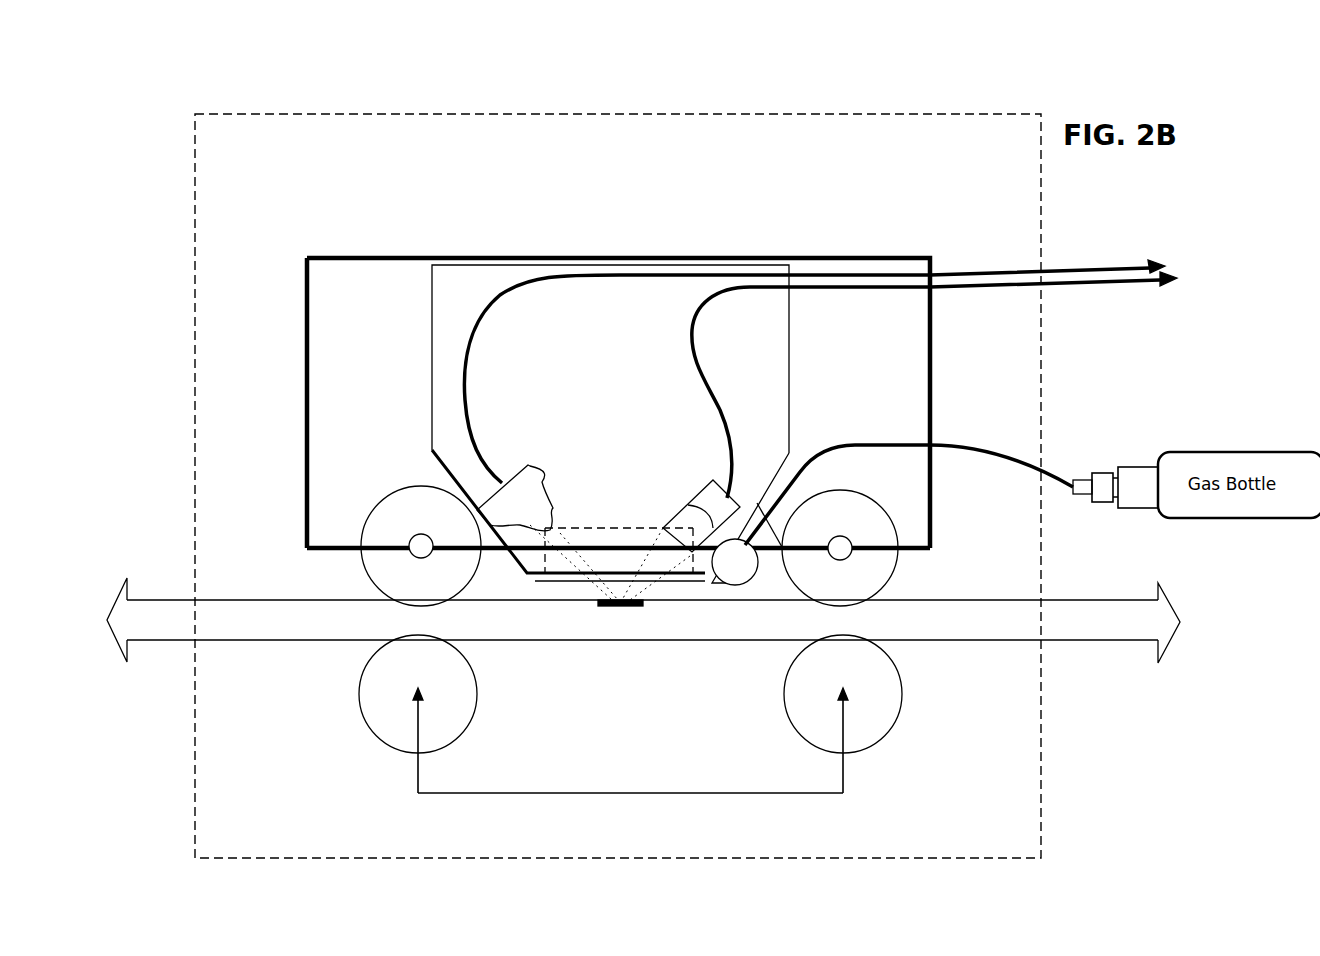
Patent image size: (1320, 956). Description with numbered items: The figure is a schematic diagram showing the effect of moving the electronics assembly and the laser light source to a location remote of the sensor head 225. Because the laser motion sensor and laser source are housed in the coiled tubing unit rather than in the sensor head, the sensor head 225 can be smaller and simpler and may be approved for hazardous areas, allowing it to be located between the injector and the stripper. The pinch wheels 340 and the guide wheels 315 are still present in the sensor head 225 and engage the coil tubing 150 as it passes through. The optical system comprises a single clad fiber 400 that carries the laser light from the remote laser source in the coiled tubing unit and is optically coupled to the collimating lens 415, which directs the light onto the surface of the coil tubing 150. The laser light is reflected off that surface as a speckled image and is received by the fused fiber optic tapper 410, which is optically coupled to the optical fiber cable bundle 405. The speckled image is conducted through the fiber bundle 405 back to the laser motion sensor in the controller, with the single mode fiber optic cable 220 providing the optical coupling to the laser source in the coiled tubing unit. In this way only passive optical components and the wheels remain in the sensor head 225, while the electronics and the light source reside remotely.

The sensor head 225 is at (607, 113).
The single mode fiber optic cable 220 is at (1018, 287).
The optical fiber cable bundle 405 is at (465, 362).
The single clad fiber 400 is at (692, 380).
The fused fiber optic tapper 410 is at (526, 465).
The collimating lens 415 is at (668, 505).
The guide wheels 315 is at (395, 486).
The coil tubing 150 is at (1078, 617).
The pinch wheels 340 is at (360, 695).